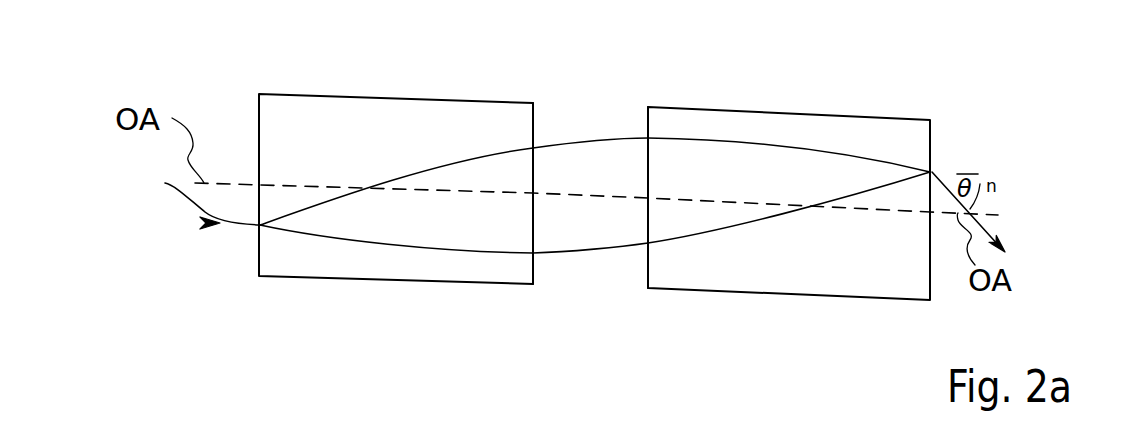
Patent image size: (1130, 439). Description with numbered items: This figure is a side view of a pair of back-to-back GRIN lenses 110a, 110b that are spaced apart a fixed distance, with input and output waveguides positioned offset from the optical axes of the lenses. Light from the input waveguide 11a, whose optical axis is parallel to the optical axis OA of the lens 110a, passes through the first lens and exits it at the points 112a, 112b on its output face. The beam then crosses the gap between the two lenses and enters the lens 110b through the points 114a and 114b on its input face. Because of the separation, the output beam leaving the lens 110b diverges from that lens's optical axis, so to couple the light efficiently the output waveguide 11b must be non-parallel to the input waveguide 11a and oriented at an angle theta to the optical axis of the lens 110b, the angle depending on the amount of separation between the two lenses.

The lens 110a is at (375, 113).
The lens 110b is at (823, 118).
The beam exit point of lens 110a 112a is at (533, 146).
The beam exit point of lens 110a 112b is at (533, 255).
The beam entry point of lens 110b 114a is at (648, 138).
The beam entry point of lens 110b 114b is at (648, 243).
The input waveguide 11a is at (165, 183).
The output waveguide 11b is at (985, 213).